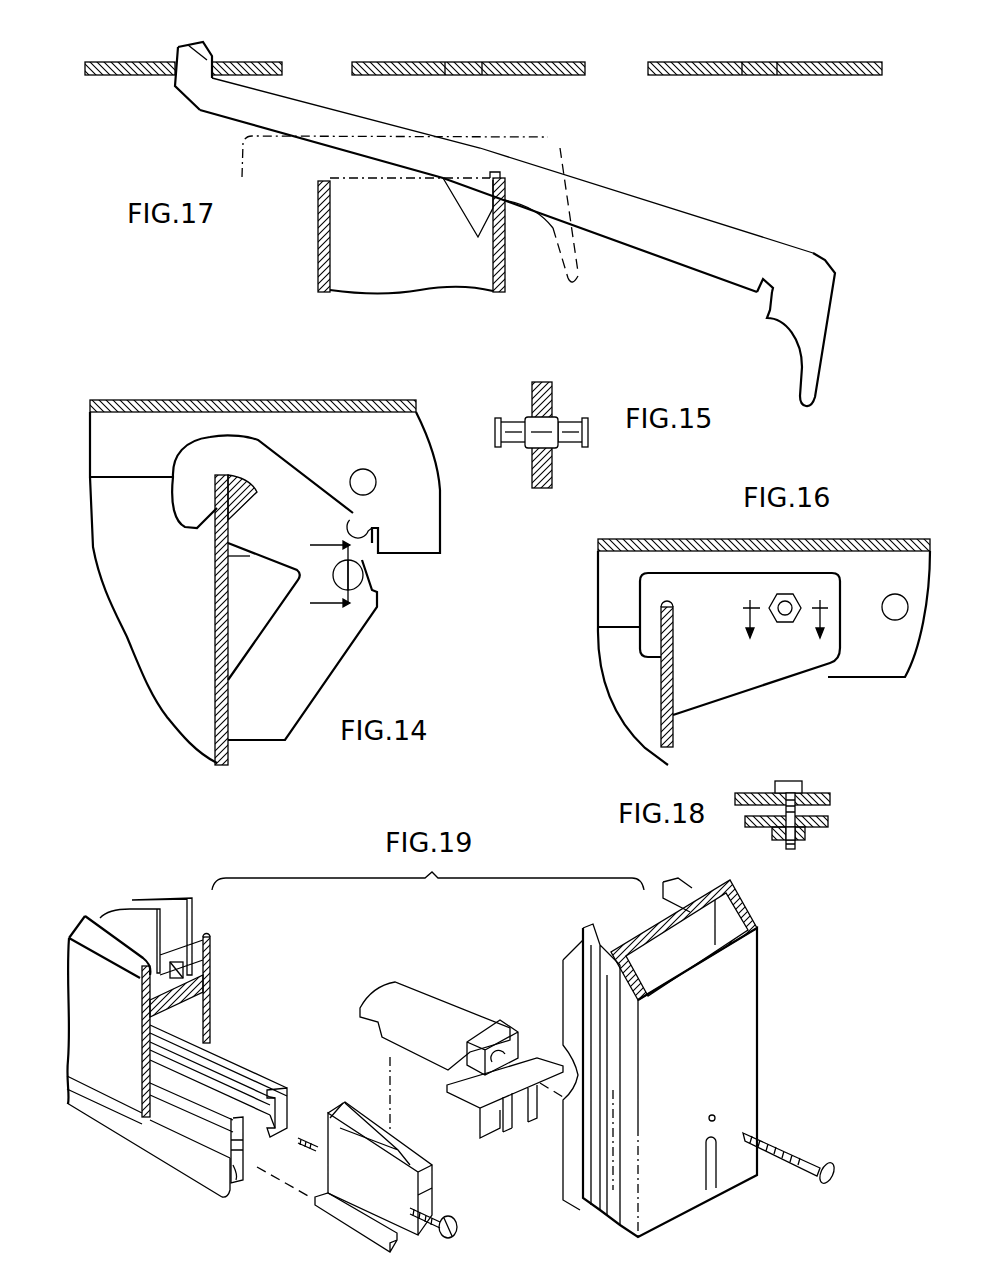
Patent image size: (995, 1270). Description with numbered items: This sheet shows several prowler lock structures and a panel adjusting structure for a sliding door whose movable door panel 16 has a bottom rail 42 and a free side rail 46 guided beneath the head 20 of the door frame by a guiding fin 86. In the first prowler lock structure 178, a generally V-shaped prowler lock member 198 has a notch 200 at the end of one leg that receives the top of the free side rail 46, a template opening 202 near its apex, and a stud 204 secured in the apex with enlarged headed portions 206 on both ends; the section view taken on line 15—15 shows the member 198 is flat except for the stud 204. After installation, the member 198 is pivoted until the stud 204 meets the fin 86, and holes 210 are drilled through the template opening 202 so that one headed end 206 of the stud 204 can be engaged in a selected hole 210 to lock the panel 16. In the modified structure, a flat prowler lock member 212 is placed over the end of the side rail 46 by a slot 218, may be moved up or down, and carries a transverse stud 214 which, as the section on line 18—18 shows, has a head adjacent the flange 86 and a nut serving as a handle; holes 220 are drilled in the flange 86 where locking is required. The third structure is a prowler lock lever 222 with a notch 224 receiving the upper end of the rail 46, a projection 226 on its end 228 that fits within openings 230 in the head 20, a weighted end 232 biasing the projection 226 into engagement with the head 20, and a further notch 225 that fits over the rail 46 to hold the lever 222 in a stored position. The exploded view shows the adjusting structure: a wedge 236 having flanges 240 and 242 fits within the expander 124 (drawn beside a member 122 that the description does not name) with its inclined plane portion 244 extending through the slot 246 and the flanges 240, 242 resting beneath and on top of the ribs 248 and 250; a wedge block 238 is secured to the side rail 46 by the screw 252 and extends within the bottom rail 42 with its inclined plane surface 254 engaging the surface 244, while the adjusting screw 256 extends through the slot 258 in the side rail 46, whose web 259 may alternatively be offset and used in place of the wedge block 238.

In FIG. 17, the movable door panel 16 is at (360, 292).
In FIG. 14, the movable door panel 16 is at (142, 680).
In FIG. 16, the movable door panel 16 is at (628, 718).
In FIG. 17, the head 20 is at (515, 63).
In FIG. 14, the head 20 is at (184, 400).
In FIG. 16, the head 20 is at (668, 538).
In FIG. 17, the free side rail 46 is at (317, 236).
In FIG. 14, the free side rail 46 is at (215, 705).
In FIG. 16, the free side rail 46 is at (674, 732).
In FIG. 19, the free side rail 46 is at (757, 1040).
In FIG. 14, the guiding fin 86 is at (441, 530).
In FIG. 16, the guiding fin 86 is at (850, 678).
In FIG. 18, the guiding fin 86 is at (818, 792).
In FIG. 14, the prowler lock structure 178 is at (356, 640).
In FIG. 14, the prowler lock member 198 is at (323, 688).
In FIG. 15, the prowler lock member 198 is at (555, 388).
In FIG. 14, the notch 200 is at (243, 482).
In FIG. 14, the template opening 202 is at (358, 530).
In FIG. 14, the stud 204 is at (365, 577).
In FIG. 15, the stud 204 is at (565, 447).
In FIG. 14, the enlarged headed portions 206 is at (335, 575).
In FIG. 15, the enlarged headed portions 206 is at (500, 418).
In FIG. 14, the holes 210 is at (358, 472).
In FIG. 16, the prowler lock member 212 is at (750, 693).
In FIG. 18, the prowler lock member 212 is at (763, 828).
In FIG. 16, the stud 214 is at (780, 618).
In FIG. 18, the stud 214 is at (797, 850).
In FIG. 16, the slot 218 is at (663, 607).
In FIG. 16, the holes 220 is at (893, 615).
In FIG. 18, the holes 220 is at (793, 782).
In FIG. 17, the prowler lock lever 222 is at (613, 188).
In FIG. 17, the notch 224 is at (503, 193).
In FIG. 17, the further notch 225 is at (766, 289).
In FIG. 17, the projection 226 is at (203, 55).
In FIG. 17, the end 228 is at (215, 115).
In FIG. 17, the openings 230 is at (180, 53).
In FIG. 17, the end 232 is at (786, 246).
In FIG. 14, the section line 15 is at (330, 575).
In FIG. 16, the section line 18 is at (784, 619).
In FIG. 19, the bottom rail 42 is at (208, 962).
In FIG. 19, the sill board 122 is at (152, 1153).
In FIG. 19, the expander 124 is at (222, 1040).
In FIG. 19, the wedge 236 is at (420, 1190).
In FIG. 19, the wedge block 238 is at (448, 1013).
In FIG. 19, the flange 240 is at (345, 1220).
In FIG. 19, the flange 242 is at (408, 1153).
In FIG. 19, the inclined plane portion 244 is at (365, 1130).
In FIG. 19, the slot 246 is at (222, 1098).
In FIG. 19, the rib 248 is at (252, 1158).
In FIG. 19, the rib 250 is at (274, 1090).
In FIG. 19, the screw 252 is at (793, 1162).
In FIG. 19, the inclined plane surface 254 is at (395, 1068).
In FIG. 19, the adjusting screw 256 is at (458, 1230).
In FIG. 19, the slot 258 is at (707, 1160).
In FIG. 19, the web 259 is at (658, 920).